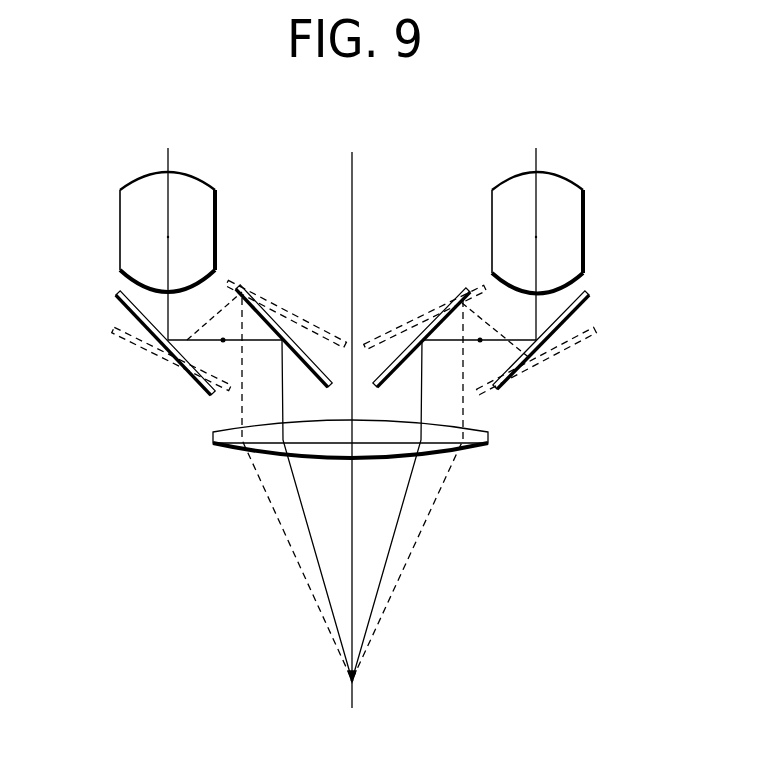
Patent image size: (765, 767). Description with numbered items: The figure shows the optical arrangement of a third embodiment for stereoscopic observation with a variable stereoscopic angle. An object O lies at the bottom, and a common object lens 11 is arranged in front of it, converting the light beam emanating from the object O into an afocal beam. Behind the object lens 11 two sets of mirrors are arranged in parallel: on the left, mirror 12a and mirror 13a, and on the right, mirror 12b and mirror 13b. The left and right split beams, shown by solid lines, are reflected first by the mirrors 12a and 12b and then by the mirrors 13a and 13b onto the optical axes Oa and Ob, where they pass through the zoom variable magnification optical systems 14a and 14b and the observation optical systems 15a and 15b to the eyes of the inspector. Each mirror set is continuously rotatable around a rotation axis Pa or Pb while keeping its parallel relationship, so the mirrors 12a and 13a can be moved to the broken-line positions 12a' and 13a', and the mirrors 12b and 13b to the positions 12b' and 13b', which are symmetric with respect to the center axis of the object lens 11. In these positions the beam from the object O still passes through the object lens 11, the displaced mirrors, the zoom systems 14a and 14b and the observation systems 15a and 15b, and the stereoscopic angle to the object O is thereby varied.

The object lens 11 is at (225, 445).
The mirror 12a is at (284, 353).
The position of mirror 12a' is at (286, 298).
The mirror 12b is at (421, 355).
The position of mirror 12b' is at (425, 299).
The mirror 13a is at (165, 369).
The position of mirror 13a' is at (162, 369).
The mirror 13b is at (541, 372).
The position of mirror 13b' is at (572, 360).
The zoom variable magnification optical system 14a is at (130, 198).
The zoom variable magnification optical system 14b is at (567, 190).
The observation optical system 15a is at (167, 229).
The observation optical system 15b is at (535, 229).
The optical axis Oa is at (168, 237).
The optical axis Ob is at (536, 237).
The rotation axis Pa is at (223, 340).
The rotation axis Pb is at (480, 340).
The object O is at (363, 685).